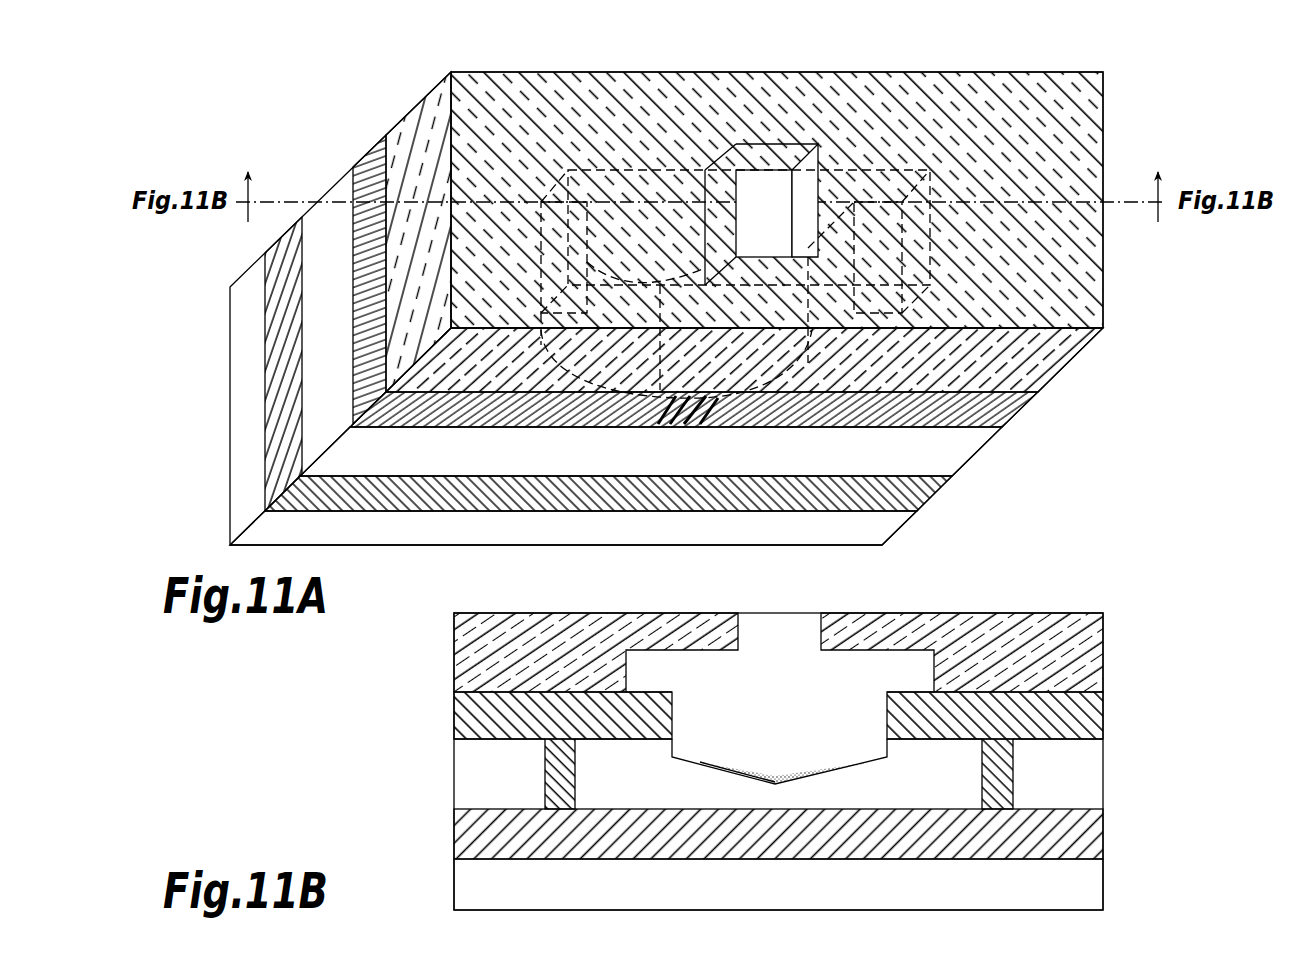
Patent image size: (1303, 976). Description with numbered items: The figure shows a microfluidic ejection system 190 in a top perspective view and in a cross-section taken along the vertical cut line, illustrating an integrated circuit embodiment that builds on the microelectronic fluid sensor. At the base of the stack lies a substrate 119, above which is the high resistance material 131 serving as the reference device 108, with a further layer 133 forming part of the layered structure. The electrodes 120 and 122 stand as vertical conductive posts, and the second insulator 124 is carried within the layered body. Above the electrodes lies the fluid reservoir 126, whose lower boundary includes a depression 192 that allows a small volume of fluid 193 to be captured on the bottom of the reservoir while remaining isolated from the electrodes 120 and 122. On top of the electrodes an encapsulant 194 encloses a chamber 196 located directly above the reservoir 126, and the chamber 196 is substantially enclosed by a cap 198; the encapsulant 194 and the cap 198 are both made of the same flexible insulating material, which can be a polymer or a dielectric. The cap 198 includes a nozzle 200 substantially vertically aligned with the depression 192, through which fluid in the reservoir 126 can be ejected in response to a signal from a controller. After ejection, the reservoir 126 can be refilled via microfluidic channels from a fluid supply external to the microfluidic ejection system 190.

In FIG. 11A, the microfluidic ejection system 190 is at (1120, 101).
In FIG. 11B, the microfluidic ejection system 190 is at (1127, 589).
In FIG. 11A, the nozzle 200 is at (765, 178).
In FIG. 11B, the nozzle 200 is at (777, 628).
In FIG. 11A, the fluid reservoir 126 is at (780, 238).
In FIG. 11B, the fluid reservoir 126 is at (868, 754).
In FIG. 11A, the encapsulant 194 is at (1063, 367).
In FIG. 11B, the encapsulant 194 is at (1093, 657).
In FIG. 11B, the cap 198 is at (973, 613).
In FIG. 11B, the chamber 196 is at (898, 687).
In FIG. 11B, the fluid 193 is at (722, 763).
In FIG. 11B, the depression 192 is at (800, 777).
In FIG. 11A, the conductive layer 133 is at (988, 447).
In FIG. 11B, the conductive layer 133 is at (1103, 741).
In FIG. 11A, the second insulator 124 is at (673, 423).
In FIG. 11B, the electrode 120 is at (545, 765).
In FIG. 11B, the electrode 122 is at (1013, 768).
In FIG. 11A, the reference device 108 is at (671, 364).
In FIG. 11B, the reference device 108 is at (837, 827).
In FIG. 11A, the high resistance material 131 is at (937, 495).
In FIG. 11B, the high resistance material 131 is at (1093, 843).
In FIG. 11A, the substrate 119 is at (902, 527).
In FIG. 11B, the substrate 119 is at (1088, 890).